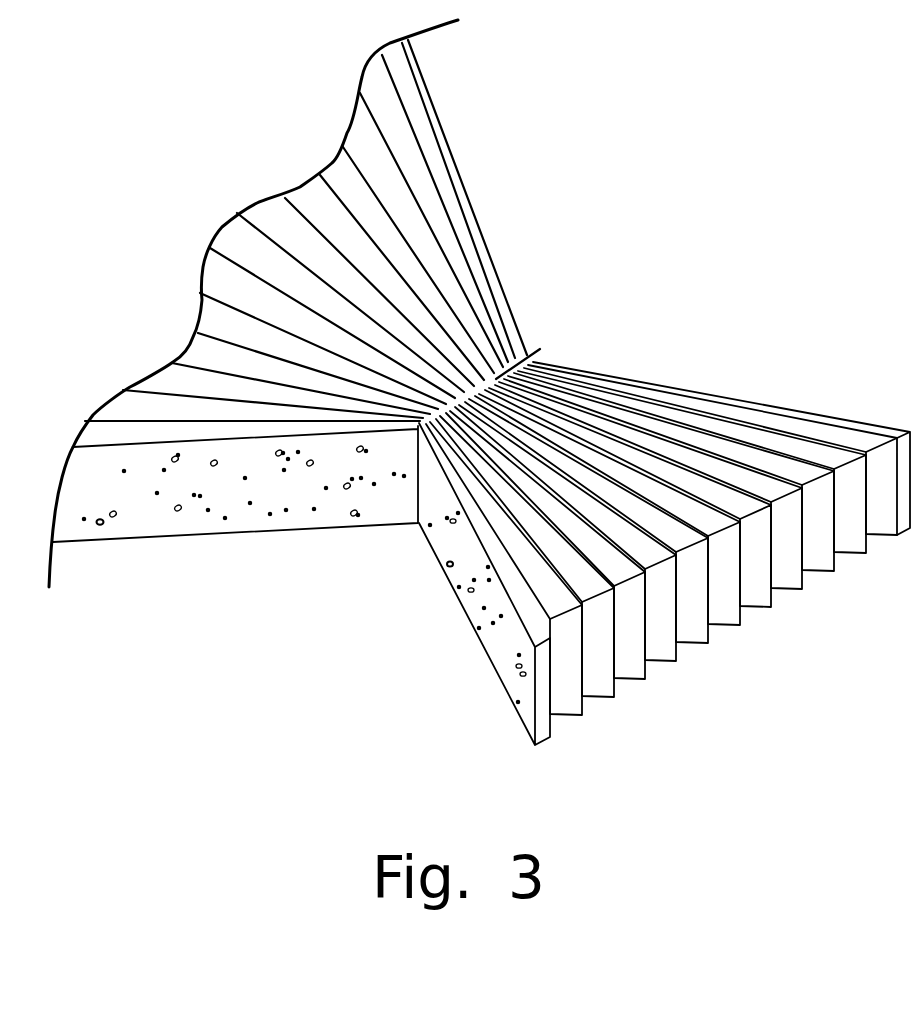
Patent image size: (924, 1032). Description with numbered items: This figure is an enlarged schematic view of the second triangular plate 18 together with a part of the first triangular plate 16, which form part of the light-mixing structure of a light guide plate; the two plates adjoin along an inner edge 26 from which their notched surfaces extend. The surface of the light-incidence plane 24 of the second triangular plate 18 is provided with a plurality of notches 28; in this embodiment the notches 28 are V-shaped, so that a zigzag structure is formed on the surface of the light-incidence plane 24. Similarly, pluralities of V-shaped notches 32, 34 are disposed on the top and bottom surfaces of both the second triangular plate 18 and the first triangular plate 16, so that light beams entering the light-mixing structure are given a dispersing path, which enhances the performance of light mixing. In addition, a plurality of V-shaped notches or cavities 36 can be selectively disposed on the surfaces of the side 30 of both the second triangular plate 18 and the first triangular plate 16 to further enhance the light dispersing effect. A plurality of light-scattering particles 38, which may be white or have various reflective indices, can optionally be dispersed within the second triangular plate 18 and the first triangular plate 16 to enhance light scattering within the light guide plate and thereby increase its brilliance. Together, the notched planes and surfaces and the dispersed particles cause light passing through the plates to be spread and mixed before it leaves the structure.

The first triangular plate 16 is at (442, 133).
The second triangular plate 18 is at (817, 412).
The light-incidence plane 24 is at (668, 551).
The root edge 26 is at (527, 361).
The notches 28 is at (597, 682).
The side 30 is at (301, 584).
The V-shaped notches 32 is at (657, 423).
The V-shaped notches 34 is at (240, 263).
The V-shaped notches or cavities 36 is at (101, 525).
The light-scattering particles 38 is at (212, 523).